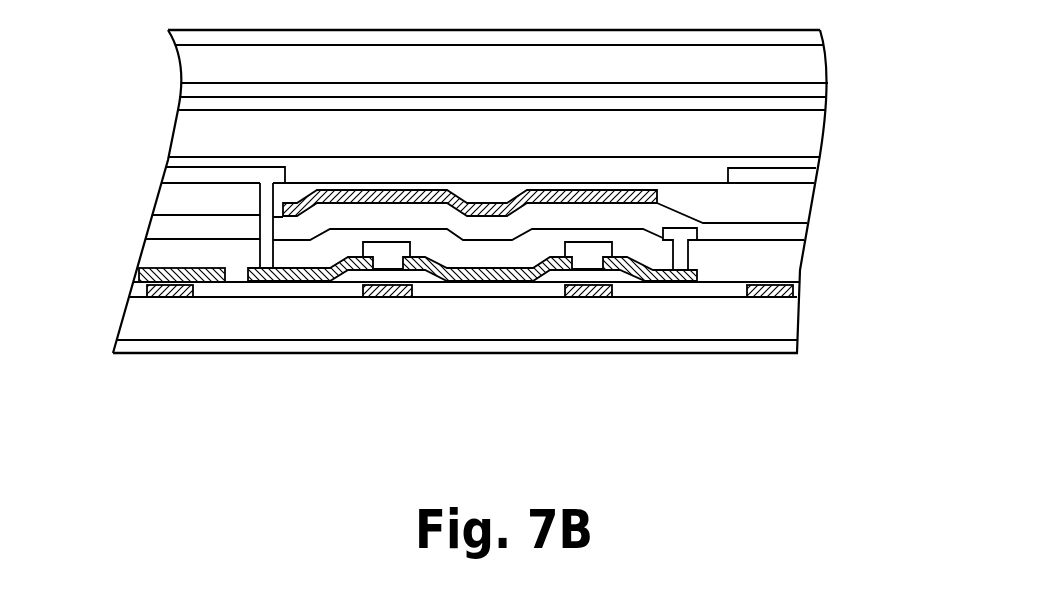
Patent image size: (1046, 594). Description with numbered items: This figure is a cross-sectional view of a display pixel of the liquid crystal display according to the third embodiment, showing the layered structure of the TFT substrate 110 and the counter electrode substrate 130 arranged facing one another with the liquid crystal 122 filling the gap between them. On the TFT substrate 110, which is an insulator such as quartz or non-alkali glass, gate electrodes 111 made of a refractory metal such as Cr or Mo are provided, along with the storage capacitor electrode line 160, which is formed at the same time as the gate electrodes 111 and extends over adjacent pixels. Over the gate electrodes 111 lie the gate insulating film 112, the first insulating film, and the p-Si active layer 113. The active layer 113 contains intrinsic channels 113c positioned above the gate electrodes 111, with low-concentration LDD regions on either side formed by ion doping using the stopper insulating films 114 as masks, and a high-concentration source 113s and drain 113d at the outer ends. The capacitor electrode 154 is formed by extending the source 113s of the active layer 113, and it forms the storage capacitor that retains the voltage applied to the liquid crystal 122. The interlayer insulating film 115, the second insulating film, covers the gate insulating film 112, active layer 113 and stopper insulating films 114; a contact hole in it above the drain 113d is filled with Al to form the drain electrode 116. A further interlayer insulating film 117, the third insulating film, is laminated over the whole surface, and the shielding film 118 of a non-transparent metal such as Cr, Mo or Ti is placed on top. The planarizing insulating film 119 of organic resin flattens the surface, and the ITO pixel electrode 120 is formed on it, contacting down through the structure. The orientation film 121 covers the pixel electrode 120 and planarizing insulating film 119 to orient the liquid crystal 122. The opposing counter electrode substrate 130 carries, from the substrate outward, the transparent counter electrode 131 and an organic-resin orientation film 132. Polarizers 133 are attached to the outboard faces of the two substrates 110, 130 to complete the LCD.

The TFT substrate 110 is at (785, 312).
The gate electrode 111 is at (390, 300).
The gate insulating film 112 is at (727, 283).
The active layer 113 is at (490, 283).
The source 113s is at (268, 283).
The drain 113d is at (687, 283).
The channel 113c is at (400, 267).
The stopper insulating film 114 is at (404, 245).
The interlayer insulating film 115 is at (787, 262).
The drain electrode 116 is at (681, 236).
The interlayer insulating film 117 is at (797, 233).
The shielding film 118 is at (557, 190).
The planarizing insulating film 119 is at (797, 210).
The pixel electrode 120 is at (253, 177).
The orientation film 121 is at (817, 163).
The liquid crystal 122 is at (817, 145).
The counter electrode substrate 130 is at (807, 72).
The counter electrode 131 is at (813, 90).
The orientation film 132 is at (815, 102).
The polarizer 133 is at (812, 42).
The capacitor electrode 154 is at (138, 270).
The storage capacitor electrode line 160 is at (178, 298).